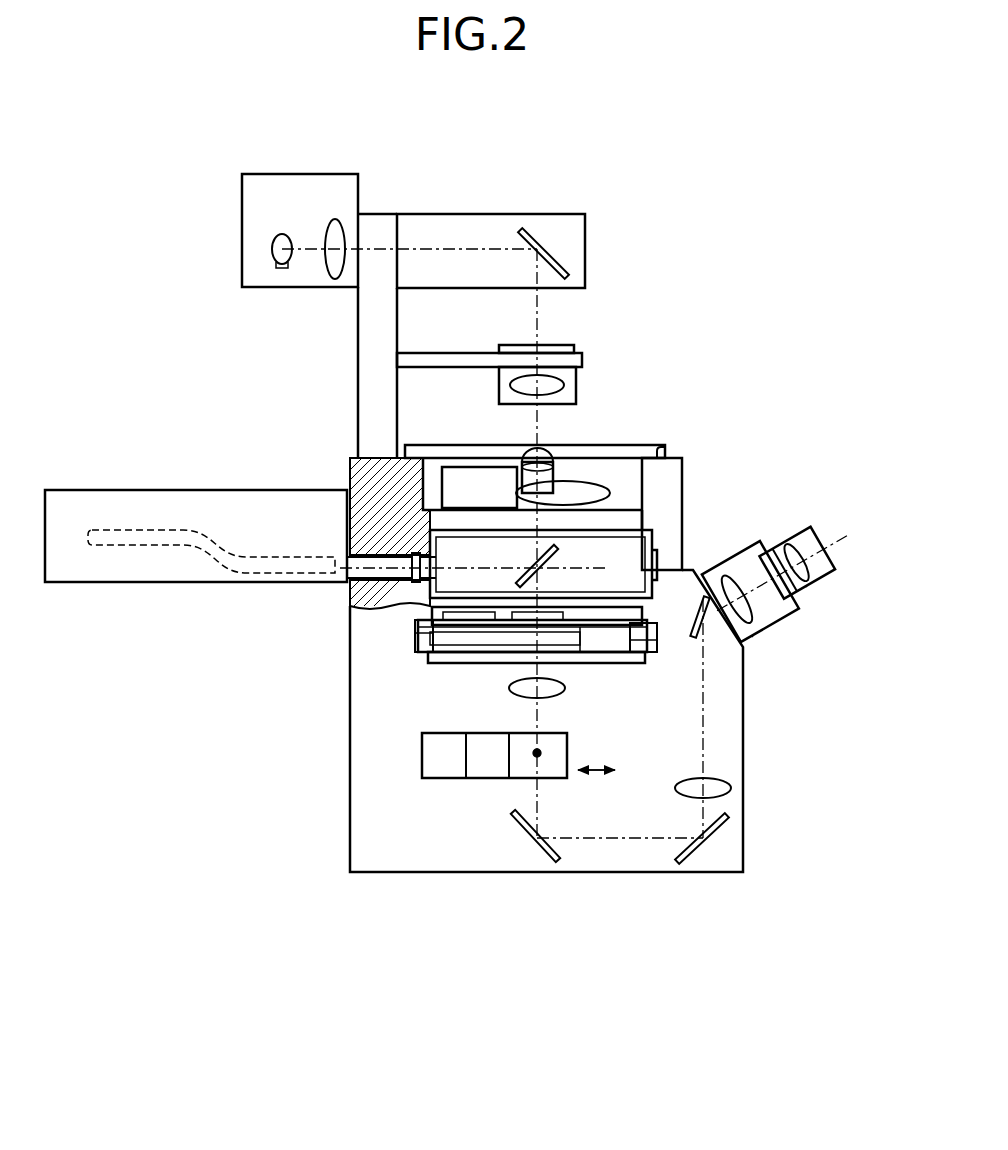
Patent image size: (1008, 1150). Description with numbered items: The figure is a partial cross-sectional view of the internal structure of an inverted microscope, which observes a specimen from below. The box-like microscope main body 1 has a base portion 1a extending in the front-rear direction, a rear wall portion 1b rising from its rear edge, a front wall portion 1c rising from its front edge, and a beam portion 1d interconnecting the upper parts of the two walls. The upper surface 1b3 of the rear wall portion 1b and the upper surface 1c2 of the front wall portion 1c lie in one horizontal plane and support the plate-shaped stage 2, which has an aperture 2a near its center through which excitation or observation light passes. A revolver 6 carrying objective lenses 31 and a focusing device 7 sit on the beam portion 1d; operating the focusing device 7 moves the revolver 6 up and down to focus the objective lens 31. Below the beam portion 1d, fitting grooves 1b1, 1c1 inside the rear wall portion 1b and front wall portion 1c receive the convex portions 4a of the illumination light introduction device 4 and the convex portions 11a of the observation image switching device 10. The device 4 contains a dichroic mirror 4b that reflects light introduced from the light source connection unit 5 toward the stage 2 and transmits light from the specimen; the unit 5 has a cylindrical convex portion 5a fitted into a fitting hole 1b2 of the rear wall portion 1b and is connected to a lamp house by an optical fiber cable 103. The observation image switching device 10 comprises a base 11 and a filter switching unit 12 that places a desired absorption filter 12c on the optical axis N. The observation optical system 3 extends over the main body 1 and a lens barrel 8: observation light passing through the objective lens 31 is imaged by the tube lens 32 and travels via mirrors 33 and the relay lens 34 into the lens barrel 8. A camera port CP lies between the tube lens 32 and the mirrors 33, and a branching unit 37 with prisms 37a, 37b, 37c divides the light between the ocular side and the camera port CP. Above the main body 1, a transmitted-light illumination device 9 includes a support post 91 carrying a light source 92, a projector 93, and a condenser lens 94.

The microscope main body 1 is at (677, 258).
The base portion 1a is at (387, 853).
The rear wall portion 1b is at (350, 458).
The fitting groove 1b1 is at (417, 622).
The fitting hole 1b2 is at (368, 553).
The upper surface of rear wall portion 1b3 is at (378, 457).
The front wall portion 1c is at (676, 478).
The fitting groove 1c1 is at (652, 562).
The upper surface of front wall portion 1c2 is at (661, 450).
The beam portion 1d is at (605, 520).
The stage 2 is at (635, 445).
The aperture 2a is at (537, 449).
The observation optical system 3 is at (836, 737).
The illumination light introduction device 4 is at (447, 548).
The convex portion 4a is at (424, 575).
The dichroic mirror 4b is at (554, 553).
The light source connection unit 5 is at (117, 507).
The convex portion 5a is at (350, 602).
The revolver 6 is at (573, 493).
The focusing device 7 is at (463, 480).
The lens barrel 8 is at (737, 552).
The transmitted-light illumination device 9 is at (312, 171).
The observation image switching device 10 is at (446, 661).
The base 11 is at (478, 647).
The convex portion 11a is at (422, 640).
The filter switching unit 12 is at (433, 612).
The absorption filter 12c is at (520, 622).
The objective lens 31 is at (548, 458).
The tube lens 32 is at (556, 690).
The mirror 33 is at (700, 630).
The relay lens 34 is at (731, 788).
The branching unit 37 is at (446, 801).
The prism 37a is at (567, 745).
The prism 37b is at (487, 778).
The prism 37c is at (428, 778).
The support post 91 is at (367, 325).
The light source 92 is at (253, 202).
The projector 93 is at (490, 220).
The condenser lens 94 is at (557, 385).
The optical fiber cable 103 is at (128, 545).
The optical axis N is at (540, 320).
The camera port CP is at (535, 755).